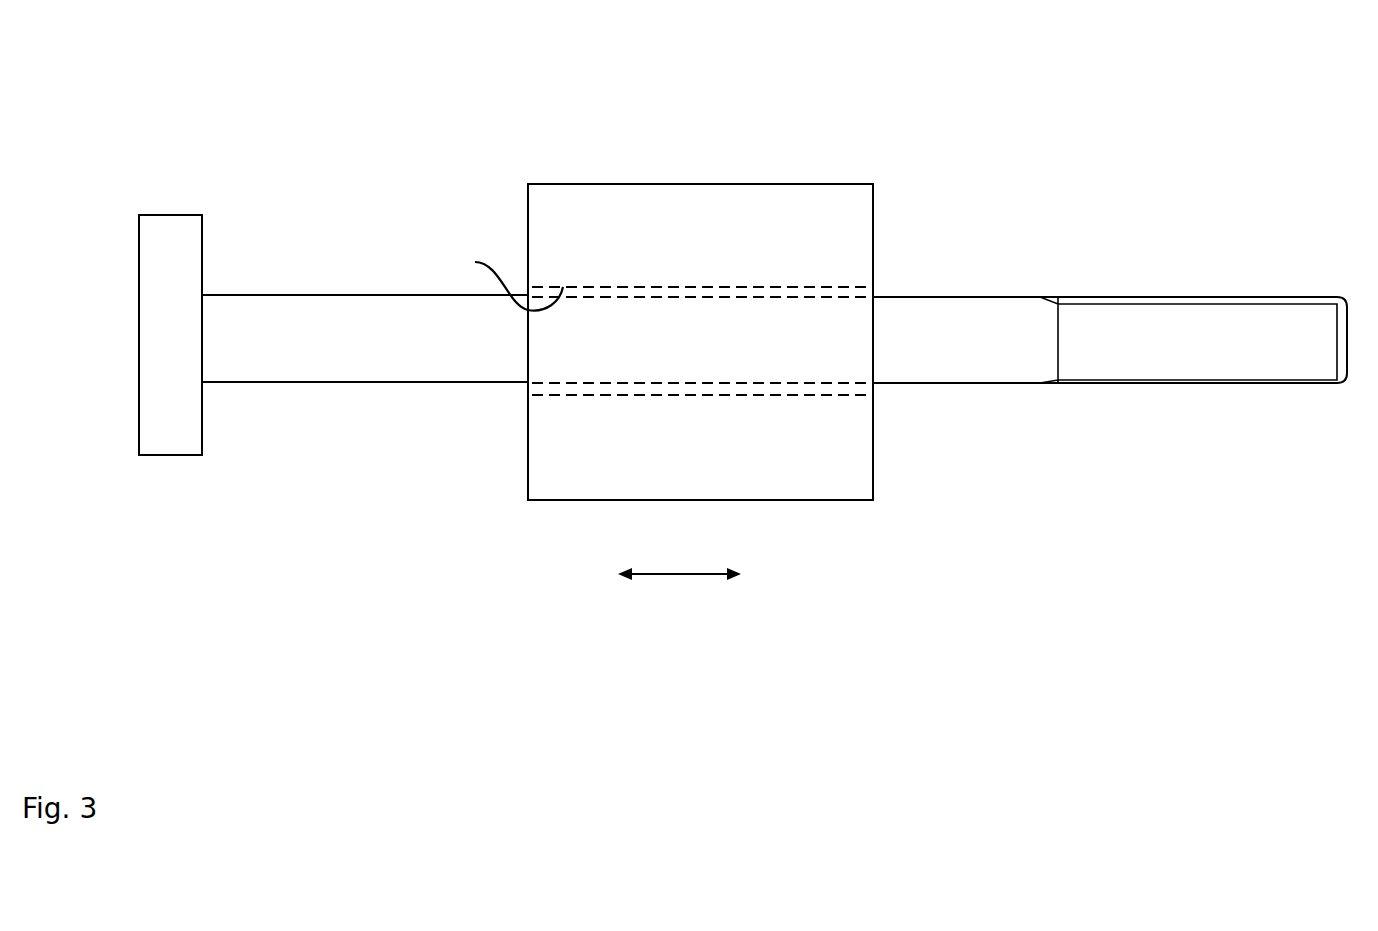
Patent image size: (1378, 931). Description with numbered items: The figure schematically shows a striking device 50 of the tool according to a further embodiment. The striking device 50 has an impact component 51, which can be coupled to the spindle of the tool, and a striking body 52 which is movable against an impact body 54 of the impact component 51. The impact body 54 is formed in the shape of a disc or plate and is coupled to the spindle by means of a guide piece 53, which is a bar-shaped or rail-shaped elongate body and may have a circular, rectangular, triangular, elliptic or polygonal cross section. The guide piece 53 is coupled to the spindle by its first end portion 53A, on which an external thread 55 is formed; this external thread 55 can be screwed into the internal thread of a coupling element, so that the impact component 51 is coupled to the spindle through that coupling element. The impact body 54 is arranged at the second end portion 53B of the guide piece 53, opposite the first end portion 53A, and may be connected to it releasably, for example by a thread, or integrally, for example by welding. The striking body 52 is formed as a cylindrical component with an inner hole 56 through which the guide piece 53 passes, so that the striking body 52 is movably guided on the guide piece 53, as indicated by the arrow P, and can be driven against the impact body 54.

The striking device 50 is at (967, 121).
The impact component 51 is at (340, 223).
The striking body 52 is at (685, 184).
The guide piece 53 is at (960, 297).
The first end portion 53A is at (1178, 265).
The second end portion 53B is at (220, 400).
The impact body 54 is at (163, 215).
The external thread 55 is at (1140, 385).
The inner hole 56 is at (499, 275).
The arrow P p is at (678, 578).